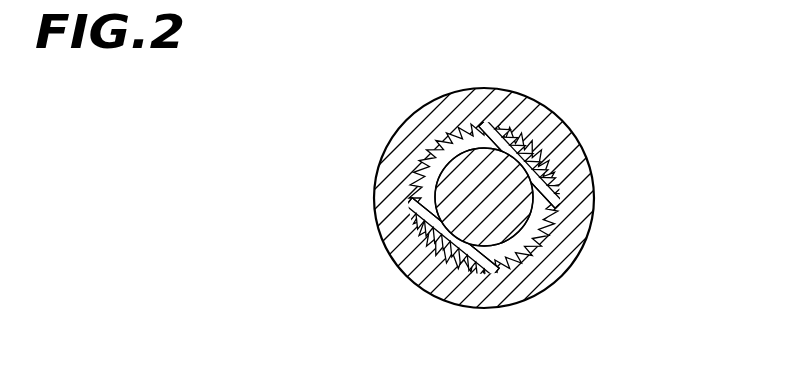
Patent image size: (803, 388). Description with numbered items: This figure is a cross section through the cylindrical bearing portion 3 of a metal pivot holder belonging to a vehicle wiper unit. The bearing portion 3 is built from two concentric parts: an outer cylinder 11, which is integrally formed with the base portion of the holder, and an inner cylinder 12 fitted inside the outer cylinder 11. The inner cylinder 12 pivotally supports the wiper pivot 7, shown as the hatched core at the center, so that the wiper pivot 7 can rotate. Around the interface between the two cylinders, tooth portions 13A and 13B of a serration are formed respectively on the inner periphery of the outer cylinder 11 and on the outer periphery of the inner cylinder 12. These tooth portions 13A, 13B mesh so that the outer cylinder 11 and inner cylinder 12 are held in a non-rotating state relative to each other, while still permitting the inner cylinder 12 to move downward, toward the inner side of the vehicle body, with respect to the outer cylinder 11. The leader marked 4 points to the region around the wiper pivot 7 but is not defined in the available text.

The bearing portion 3 is at (575, 127).
The outer cylinder 11 is at (595, 190).
The inner cylinder 12 is at (423, 213).
The wiper pivot 7 is at (463, 158).
The cable 4 is at (521, 210).
The tooth portion 13A is at (540, 232).
The tooth portion 13B is at (427, 243).